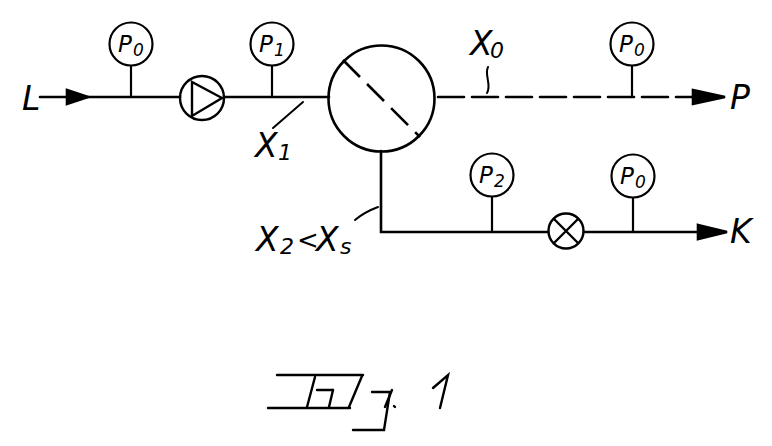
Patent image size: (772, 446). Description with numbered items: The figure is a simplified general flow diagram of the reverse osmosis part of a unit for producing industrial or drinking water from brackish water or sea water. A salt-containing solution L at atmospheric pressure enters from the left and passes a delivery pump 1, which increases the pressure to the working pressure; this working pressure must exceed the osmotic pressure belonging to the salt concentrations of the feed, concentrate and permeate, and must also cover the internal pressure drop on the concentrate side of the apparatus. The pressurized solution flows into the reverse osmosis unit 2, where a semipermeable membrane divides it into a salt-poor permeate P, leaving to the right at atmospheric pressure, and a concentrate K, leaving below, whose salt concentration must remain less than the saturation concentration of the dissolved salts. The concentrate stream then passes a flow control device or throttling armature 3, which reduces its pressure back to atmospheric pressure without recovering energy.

The delivery pump 1 is at (187, 117).
The reverse osmosis unit 2 is at (353, 145).
The throttling armature 3 is at (565, 249).